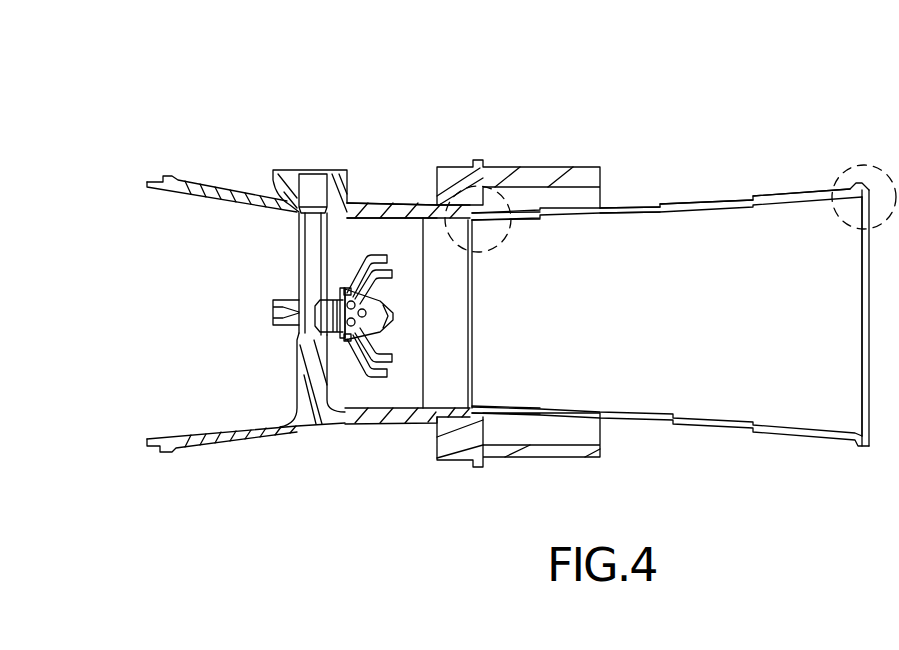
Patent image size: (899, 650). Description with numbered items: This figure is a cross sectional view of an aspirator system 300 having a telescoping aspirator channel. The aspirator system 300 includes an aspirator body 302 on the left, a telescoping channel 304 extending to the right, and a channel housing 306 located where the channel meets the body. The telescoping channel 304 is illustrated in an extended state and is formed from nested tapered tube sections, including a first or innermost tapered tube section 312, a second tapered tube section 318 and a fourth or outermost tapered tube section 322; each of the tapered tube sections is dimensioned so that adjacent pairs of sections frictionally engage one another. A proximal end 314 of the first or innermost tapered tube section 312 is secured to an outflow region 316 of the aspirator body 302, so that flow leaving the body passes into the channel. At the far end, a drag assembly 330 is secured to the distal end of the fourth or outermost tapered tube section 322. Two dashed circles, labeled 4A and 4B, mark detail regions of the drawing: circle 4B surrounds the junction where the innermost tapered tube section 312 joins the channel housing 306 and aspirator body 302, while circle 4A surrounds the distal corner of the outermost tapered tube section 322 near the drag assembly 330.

The aspirator system 300 is at (137, 100).
The aspirator body 302 is at (345, 421).
The telescoping channel 304 is at (729, 160).
The channel housing 306 is at (456, 173).
The first or innermost tapered tube section 312 is at (536, 229).
The proximal end 314 is at (486, 406).
The outflow region 316 is at (378, 204).
The second tapered tube section 318 is at (633, 216).
The fourth or outermost tapered tube section 322 is at (716, 207).
The drag assembly 330 is at (830, 395).
The detail view 4A is at (866, 166).
The detail view 4B is at (500, 250).